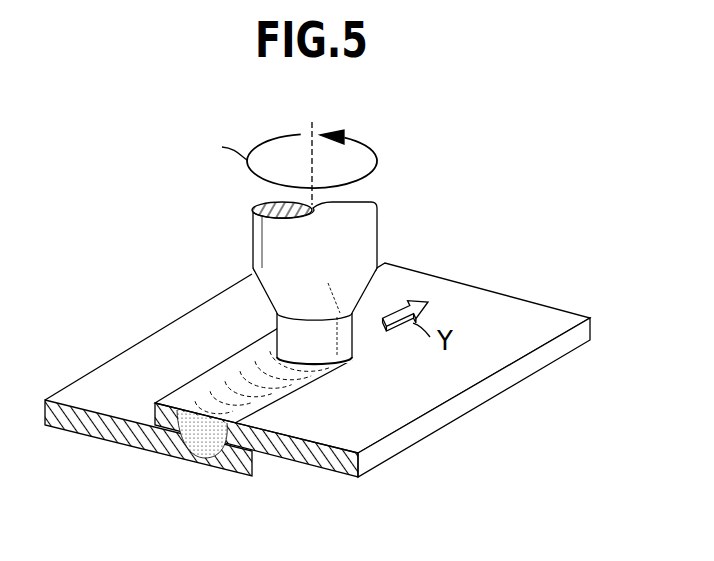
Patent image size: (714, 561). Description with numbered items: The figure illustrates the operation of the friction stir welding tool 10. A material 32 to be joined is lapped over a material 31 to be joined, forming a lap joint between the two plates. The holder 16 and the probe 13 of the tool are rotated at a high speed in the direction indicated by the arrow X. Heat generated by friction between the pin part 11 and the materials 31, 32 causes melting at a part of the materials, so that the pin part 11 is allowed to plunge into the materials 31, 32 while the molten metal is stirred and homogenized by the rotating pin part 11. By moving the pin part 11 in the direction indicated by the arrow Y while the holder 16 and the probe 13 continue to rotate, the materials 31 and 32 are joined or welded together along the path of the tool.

The friction stir welding tool 10 is at (322, 243).
The pin part 11 is at (331, 373).
The probe 13 is at (290, 328).
The holder 16 is at (252, 233).
The material to be joined 31 is at (133, 368).
The material to be joined 32 is at (515, 303).